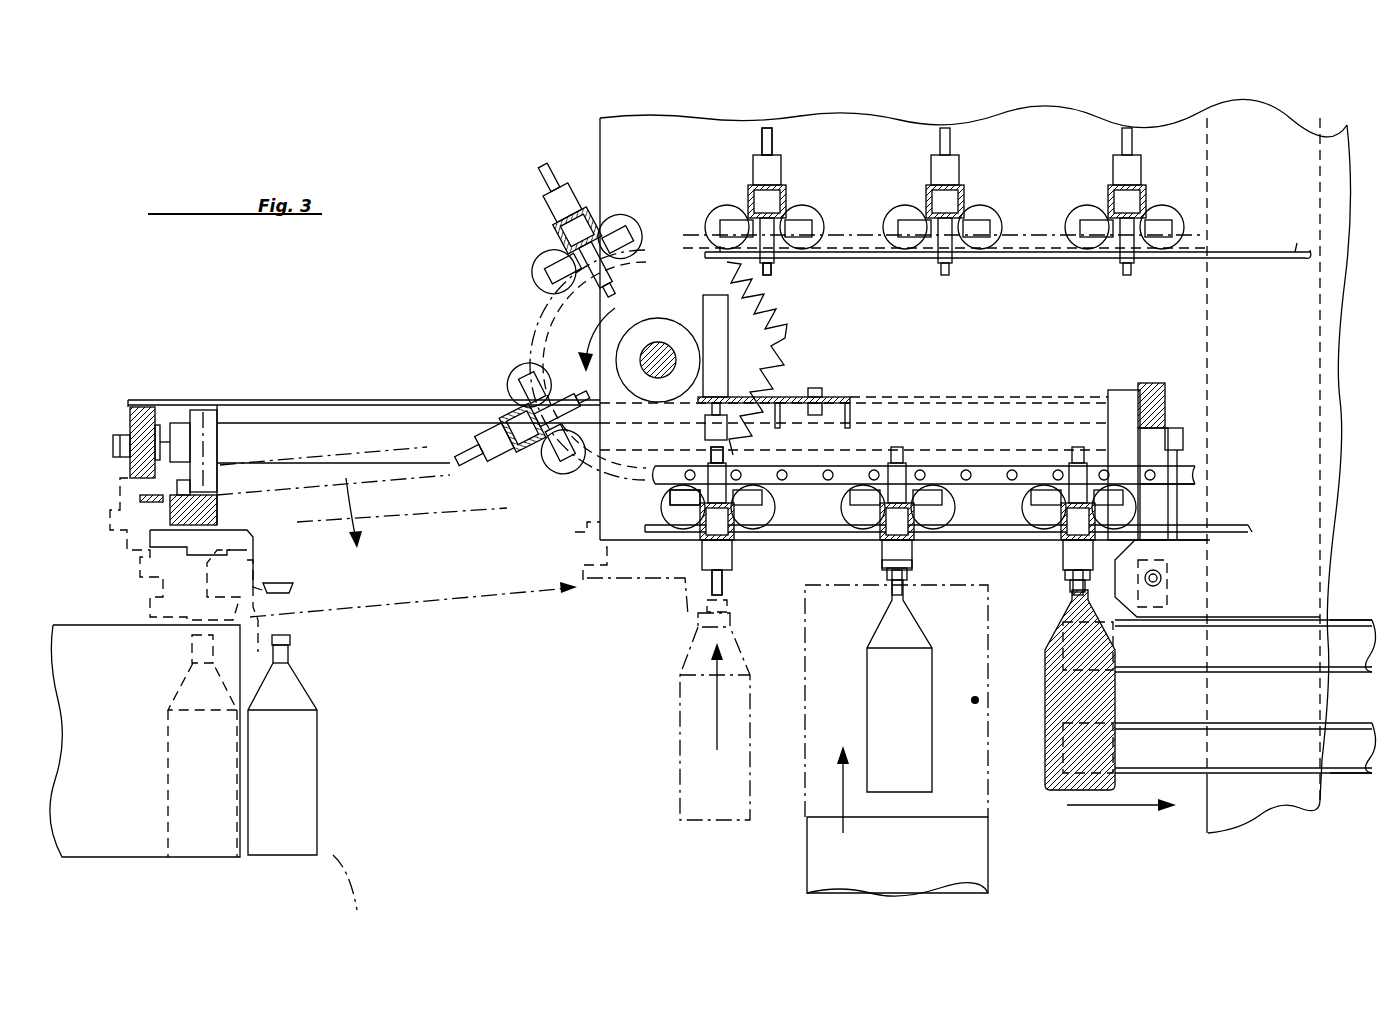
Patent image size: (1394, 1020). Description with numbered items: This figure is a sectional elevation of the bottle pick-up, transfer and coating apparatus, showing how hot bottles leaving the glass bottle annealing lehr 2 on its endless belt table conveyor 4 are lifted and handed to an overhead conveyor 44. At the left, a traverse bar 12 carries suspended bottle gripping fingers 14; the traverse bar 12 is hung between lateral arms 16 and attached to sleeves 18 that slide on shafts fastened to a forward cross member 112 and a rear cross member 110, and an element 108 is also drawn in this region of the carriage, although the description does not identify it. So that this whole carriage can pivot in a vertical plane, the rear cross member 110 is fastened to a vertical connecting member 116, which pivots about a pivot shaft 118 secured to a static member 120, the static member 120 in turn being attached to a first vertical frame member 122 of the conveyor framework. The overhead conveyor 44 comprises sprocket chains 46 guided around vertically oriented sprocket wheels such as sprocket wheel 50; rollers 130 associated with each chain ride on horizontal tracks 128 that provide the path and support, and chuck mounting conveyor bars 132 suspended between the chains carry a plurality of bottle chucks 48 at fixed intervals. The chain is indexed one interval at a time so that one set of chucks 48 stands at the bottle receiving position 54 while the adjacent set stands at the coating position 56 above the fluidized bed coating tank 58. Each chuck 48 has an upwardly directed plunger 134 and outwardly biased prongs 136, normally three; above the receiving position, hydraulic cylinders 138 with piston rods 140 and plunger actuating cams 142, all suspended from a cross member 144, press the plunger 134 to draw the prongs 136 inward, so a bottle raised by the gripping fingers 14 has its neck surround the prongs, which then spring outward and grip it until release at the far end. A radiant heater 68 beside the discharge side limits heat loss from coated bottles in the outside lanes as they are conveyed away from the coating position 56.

The glass bottle annealing lehr 2 is at (113, 622).
The endless belt table conveyor 4 is at (228, 858).
The traverse bar 12 is at (205, 495).
The bottle gripping fingers 14 is at (293, 585).
The lateral arms 16 is at (306, 399).
The sleeves 18 is at (347, 428).
The overhead conveyor 44 is at (843, 192).
The sprocket chains 46 is at (940, 470).
The bottle chucks 48 is at (540, 160).
The sprocket wheel 50 is at (770, 340).
The bottle receiving position 54 is at (712, 590).
The coating position 56 is at (877, 560).
The fluidized bed coating tank 58 is at (992, 790).
The radiant heater 68 is at (1350, 650).
The bracket 108 is at (902, 416).
The rear cross member 110 is at (1146, 390).
The forward cross member 112 is at (135, 425).
The vertical connecting member 116 is at (1163, 507).
The pivot shaft 118 is at (1163, 578).
The static member 120 is at (1190, 605).
The first vertical frame member 122 is at (1225, 697).
The horizontal tracks 128 is at (1237, 253).
The rollers 130 is at (845, 492).
The chuck mounting conveyor bars 132 is at (752, 228).
The plunger 134 is at (770, 268).
The prongs 136 is at (762, 134).
The hydraulic cylinders 138 is at (708, 306).
The piston rods 140 is at (710, 404).
The plunger actuating cams 142 is at (705, 431).
The cross member 144 is at (790, 395).